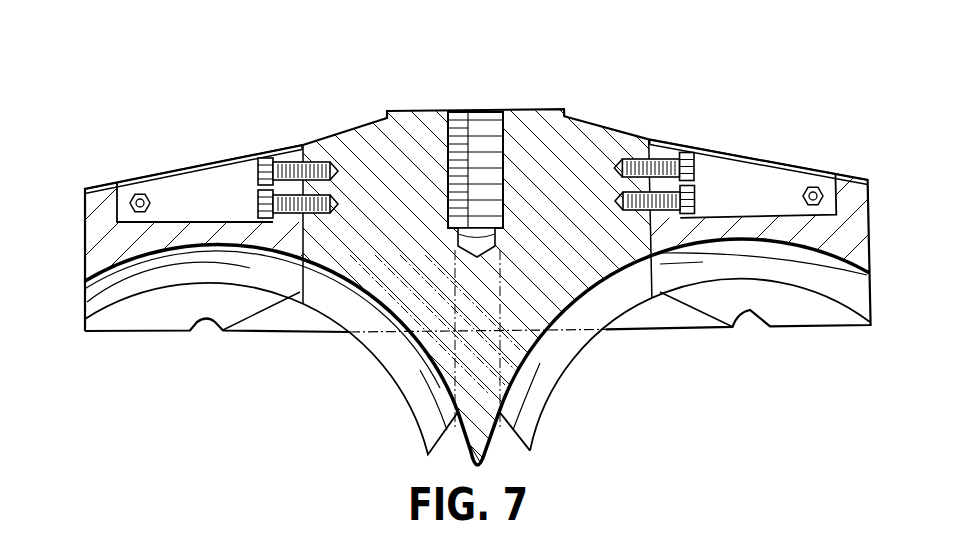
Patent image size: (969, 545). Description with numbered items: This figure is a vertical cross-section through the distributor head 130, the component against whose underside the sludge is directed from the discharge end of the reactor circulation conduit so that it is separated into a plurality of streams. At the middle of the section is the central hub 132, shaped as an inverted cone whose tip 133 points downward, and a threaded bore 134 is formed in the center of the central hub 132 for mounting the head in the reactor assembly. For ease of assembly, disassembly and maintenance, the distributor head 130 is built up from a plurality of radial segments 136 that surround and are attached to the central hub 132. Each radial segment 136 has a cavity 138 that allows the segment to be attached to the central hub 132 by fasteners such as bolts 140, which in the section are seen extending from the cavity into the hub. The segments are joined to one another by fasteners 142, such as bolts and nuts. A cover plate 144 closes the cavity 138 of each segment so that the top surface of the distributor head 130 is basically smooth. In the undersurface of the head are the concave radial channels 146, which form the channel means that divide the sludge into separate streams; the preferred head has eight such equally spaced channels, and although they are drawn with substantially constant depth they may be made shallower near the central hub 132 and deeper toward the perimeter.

The distributor head 130 is at (398, 103).
The central hub 132 is at (538, 162).
The tip 133 is at (488, 442).
The threaded bore 134 is at (473, 128).
The radial segment 136 is at (96, 186).
The cavity 138 is at (193, 182).
The bolt 140 is at (330, 157).
The fastener 142 is at (143, 194).
The cover plate 144 is at (218, 160).
The concave radial channel 146 is at (754, 345).